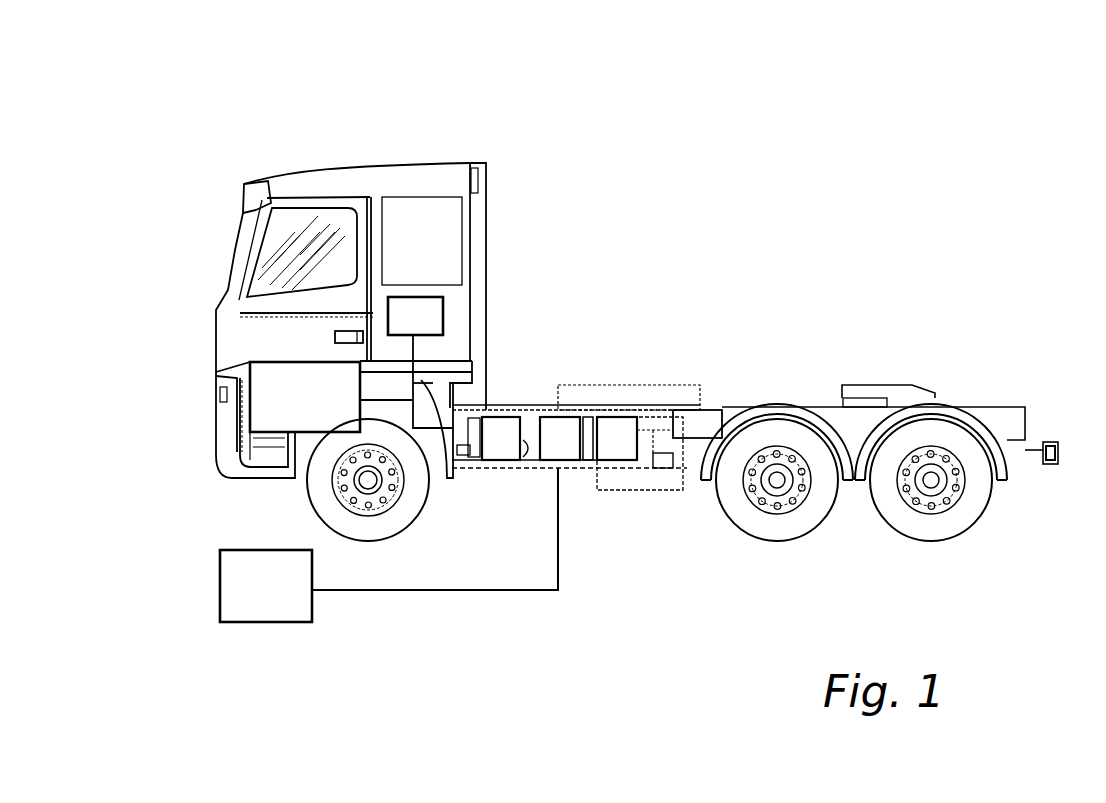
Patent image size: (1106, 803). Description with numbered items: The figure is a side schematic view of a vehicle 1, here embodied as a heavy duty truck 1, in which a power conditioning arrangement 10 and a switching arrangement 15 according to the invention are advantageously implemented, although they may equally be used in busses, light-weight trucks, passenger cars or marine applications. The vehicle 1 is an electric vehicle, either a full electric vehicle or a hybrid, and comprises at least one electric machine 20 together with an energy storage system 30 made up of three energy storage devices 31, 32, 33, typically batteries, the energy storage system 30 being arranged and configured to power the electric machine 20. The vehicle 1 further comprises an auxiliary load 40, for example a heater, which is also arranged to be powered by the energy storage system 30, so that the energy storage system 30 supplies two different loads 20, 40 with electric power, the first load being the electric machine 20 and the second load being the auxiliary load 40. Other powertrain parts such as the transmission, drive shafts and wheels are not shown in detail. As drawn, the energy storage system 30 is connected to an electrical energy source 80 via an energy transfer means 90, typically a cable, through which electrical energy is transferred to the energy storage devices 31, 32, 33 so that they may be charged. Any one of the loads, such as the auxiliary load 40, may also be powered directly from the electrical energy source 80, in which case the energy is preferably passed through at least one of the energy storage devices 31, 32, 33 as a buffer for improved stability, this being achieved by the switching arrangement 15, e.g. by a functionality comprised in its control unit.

The vehicle 1 is at (319, 108).
The power conditioning arrangement 10 is at (702, 324).
The switching arrangement 15 is at (714, 410).
The electric machine 20 is at (243, 413).
The energy storage system 30 is at (613, 535).
The energy storage device 31 is at (505, 452).
The energy storage device 32 is at (562, 452).
The energy storage device 33 is at (617, 455).
The auxiliary load 40 is at (432, 317).
The electrical energy source 80 is at (260, 622).
The energy transfer means 90 is at (500, 592).